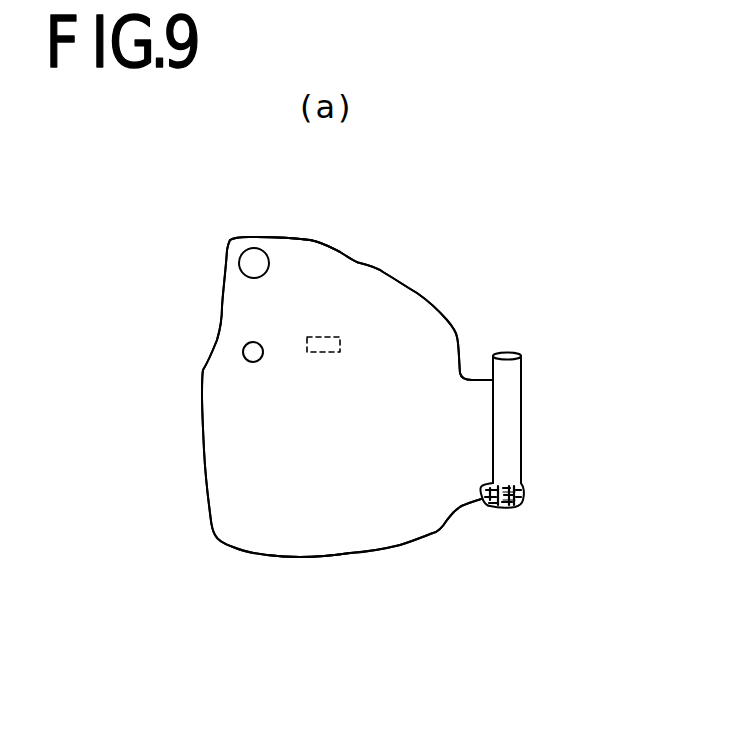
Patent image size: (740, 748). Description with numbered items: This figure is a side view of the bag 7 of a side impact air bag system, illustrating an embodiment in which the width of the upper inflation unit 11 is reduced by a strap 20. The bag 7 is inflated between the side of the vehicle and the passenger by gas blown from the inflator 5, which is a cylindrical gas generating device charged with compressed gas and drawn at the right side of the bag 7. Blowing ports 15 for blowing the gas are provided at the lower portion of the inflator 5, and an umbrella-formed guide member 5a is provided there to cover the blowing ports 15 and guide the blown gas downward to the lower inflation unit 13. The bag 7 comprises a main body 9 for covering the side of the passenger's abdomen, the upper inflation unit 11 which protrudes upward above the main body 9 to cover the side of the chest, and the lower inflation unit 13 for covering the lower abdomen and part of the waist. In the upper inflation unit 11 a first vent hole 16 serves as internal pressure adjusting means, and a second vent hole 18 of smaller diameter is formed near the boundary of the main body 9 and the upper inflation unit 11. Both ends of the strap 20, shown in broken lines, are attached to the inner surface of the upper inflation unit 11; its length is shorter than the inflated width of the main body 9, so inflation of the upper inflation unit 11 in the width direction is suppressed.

The inflator 5 is at (508, 415).
The guide member 5a is at (522, 488).
The bag 7 is at (178, 521).
The main body 9 is at (231, 423).
The upper inflation unit 11 is at (308, 248).
The lower inflation unit 13 is at (323, 542).
The blowing ports 15 is at (510, 512).
The first vent hole 16 is at (247, 261).
The second vent hole 18 is at (247, 350).
The strap 20 is at (325, 337).